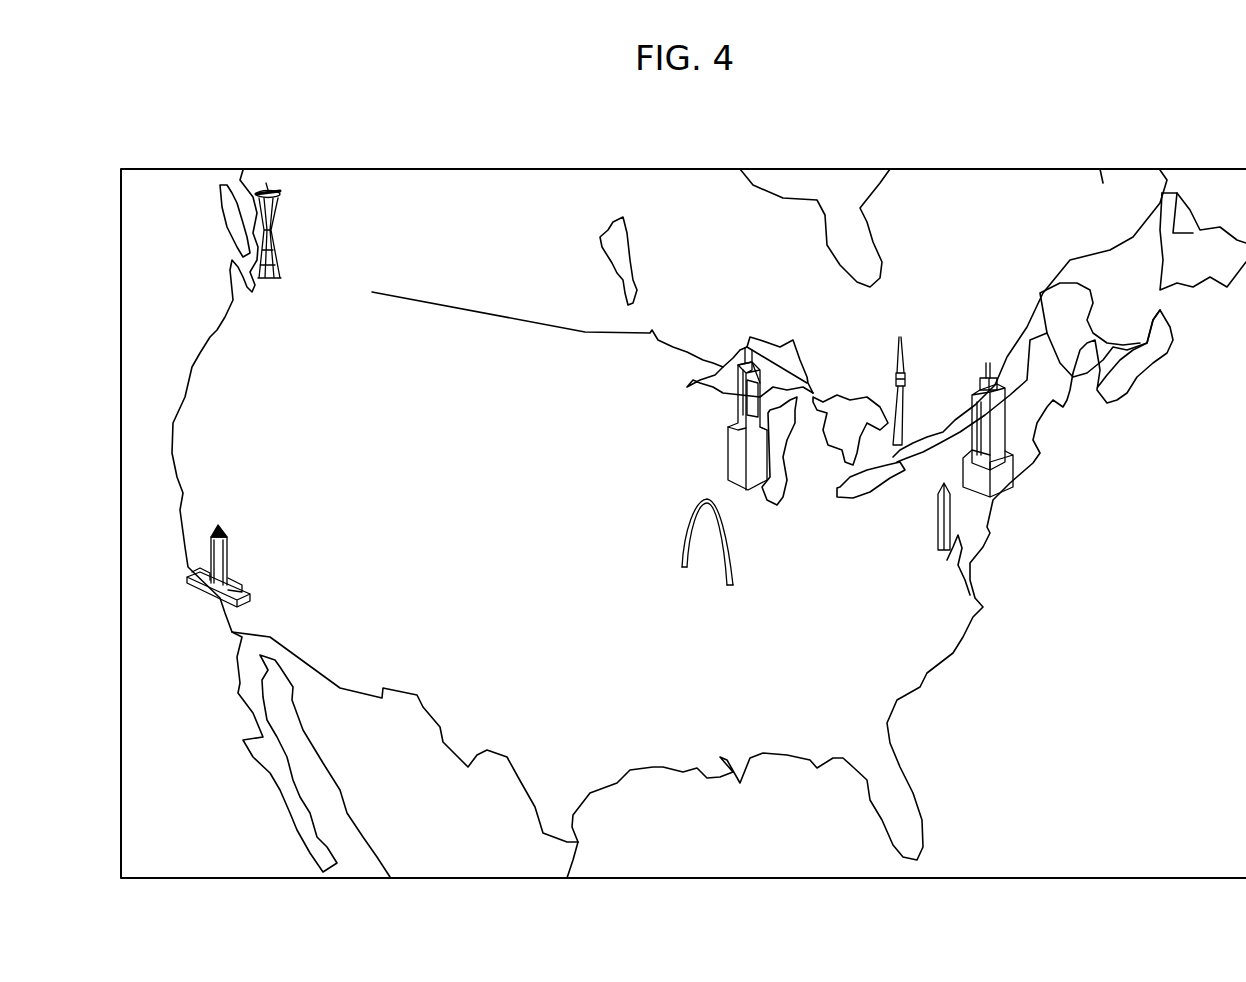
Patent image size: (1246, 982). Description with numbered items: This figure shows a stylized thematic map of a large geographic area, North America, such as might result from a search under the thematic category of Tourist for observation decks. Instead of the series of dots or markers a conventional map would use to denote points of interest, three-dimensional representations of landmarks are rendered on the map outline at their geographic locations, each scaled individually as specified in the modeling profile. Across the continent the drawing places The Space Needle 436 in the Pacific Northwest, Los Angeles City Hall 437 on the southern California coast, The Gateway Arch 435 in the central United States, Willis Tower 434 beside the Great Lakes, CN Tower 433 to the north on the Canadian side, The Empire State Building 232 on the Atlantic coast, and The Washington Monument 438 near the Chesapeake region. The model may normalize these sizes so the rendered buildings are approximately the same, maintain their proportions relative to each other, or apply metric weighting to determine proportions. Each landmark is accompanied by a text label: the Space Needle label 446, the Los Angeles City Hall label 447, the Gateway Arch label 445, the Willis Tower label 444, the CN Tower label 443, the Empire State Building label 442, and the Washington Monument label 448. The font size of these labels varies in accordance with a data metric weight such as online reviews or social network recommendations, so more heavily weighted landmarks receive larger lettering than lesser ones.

The Space Needle 436 is at (283, 258).
The label 446 is at (378, 303).
The Willis Tower 434 is at (725, 360).
The label 444 is at (672, 430).
The CN Tower 433 is at (900, 373).
The label 443 is at (843, 338).
The Empire State Building 232 is at (1002, 442).
The label 442 is at (1065, 543).
The Gateway Arch 435 is at (733, 562).
The label 445 is at (642, 568).
The Washington Monument 438 is at (938, 550).
The label 448 is at (882, 543).
The Los Angeles City Hall 437 is at (228, 538).
The label 447 is at (332, 570).